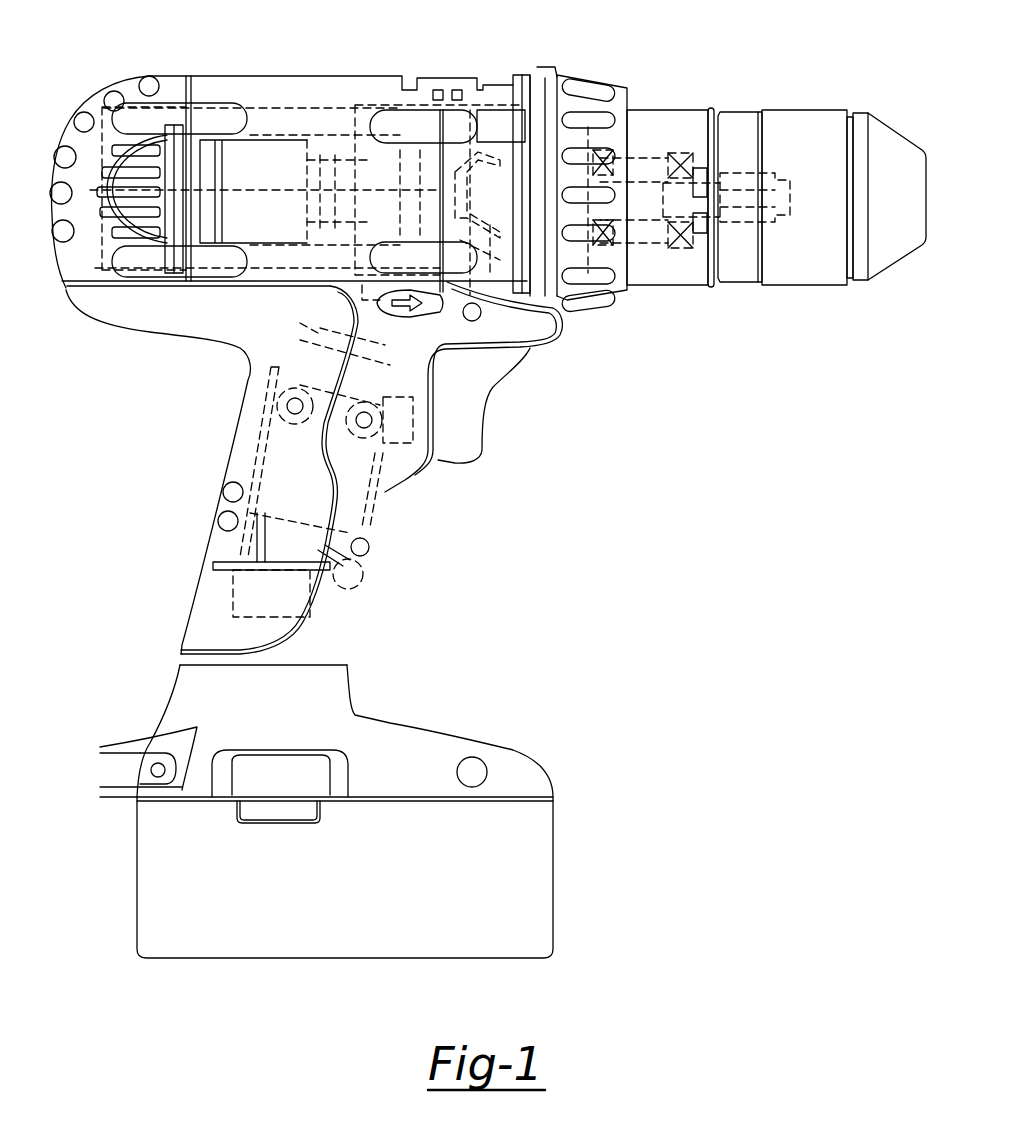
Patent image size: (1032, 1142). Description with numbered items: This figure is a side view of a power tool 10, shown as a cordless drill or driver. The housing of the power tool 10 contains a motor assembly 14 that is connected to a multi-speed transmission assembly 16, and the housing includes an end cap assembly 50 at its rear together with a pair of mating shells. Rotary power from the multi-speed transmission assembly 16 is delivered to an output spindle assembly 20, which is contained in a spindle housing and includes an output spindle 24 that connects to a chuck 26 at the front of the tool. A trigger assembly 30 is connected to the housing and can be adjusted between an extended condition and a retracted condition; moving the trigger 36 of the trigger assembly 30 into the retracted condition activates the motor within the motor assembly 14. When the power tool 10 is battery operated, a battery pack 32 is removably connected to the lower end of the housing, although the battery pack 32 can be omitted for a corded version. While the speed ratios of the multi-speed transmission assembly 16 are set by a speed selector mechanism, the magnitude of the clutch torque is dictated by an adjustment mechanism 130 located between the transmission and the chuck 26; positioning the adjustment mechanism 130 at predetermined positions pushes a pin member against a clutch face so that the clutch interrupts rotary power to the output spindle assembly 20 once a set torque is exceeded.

The power tool 10 is at (667, 425).
The motor assembly 14 is at (298, 105).
The multi-speed transmission assembly 16 is at (433, 80).
The output spindle assembly 20 is at (636, 78).
The output spindle 24 is at (740, 188).
The chuck 26 is at (806, 270).
The trigger assembly 30 is at (252, 539).
The battery pack 32 is at (540, 889).
The trigger 36 is at (470, 400).
The end cap assembly 50 is at (92, 88).
The adjustment mechanism 130 is at (618, 290).